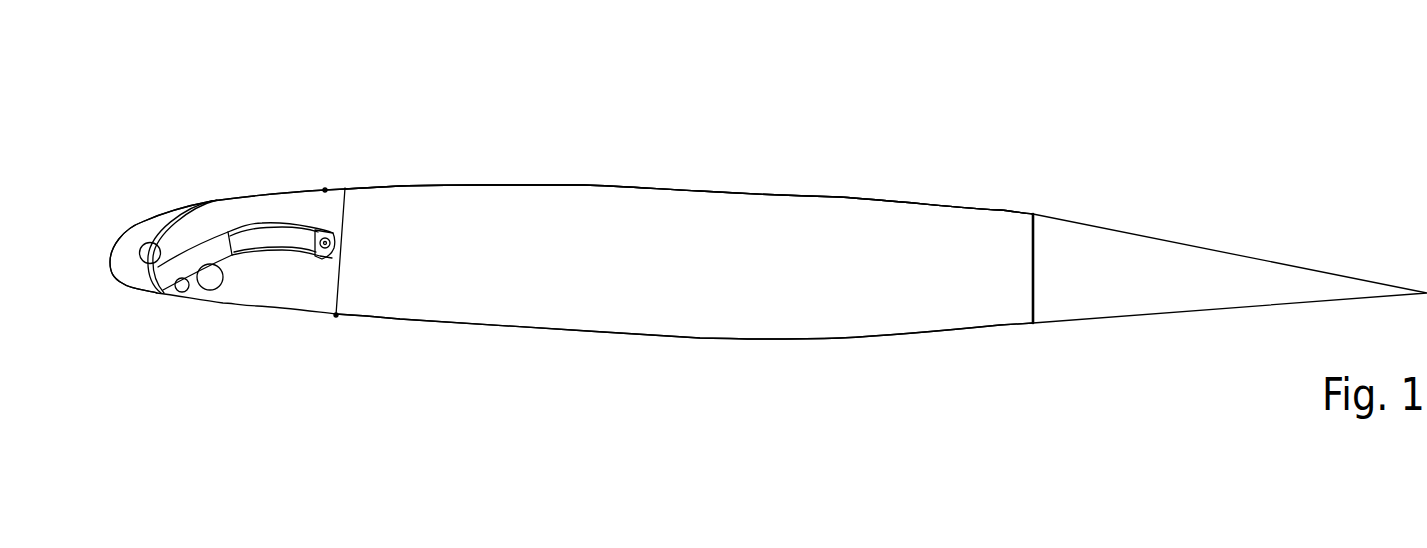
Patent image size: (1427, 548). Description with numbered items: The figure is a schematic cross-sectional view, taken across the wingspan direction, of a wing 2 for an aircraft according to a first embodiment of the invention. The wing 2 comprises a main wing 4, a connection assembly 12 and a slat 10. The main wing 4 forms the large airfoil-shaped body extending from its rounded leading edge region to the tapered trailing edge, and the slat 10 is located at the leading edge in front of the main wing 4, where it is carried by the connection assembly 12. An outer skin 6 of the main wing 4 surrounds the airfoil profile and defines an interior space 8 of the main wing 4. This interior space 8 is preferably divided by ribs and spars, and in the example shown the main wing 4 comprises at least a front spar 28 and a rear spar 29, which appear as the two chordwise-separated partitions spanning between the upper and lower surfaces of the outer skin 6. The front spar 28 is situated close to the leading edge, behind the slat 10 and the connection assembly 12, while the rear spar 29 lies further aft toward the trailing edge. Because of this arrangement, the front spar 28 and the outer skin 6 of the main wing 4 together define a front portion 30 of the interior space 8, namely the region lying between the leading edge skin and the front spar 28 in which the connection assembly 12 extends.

The wing 2 is at (773, 157).
The main wing 4 is at (395, 187).
The outer skin 6 is at (308, 187).
The interior space 8 is at (585, 207).
The slat 10 is at (132, 224).
The connection assembly 12 is at (255, 275).
The front spar 28 is at (343, 268).
The rear spar 29 is at (1037, 280).
The front portion 30 is at (327, 294).